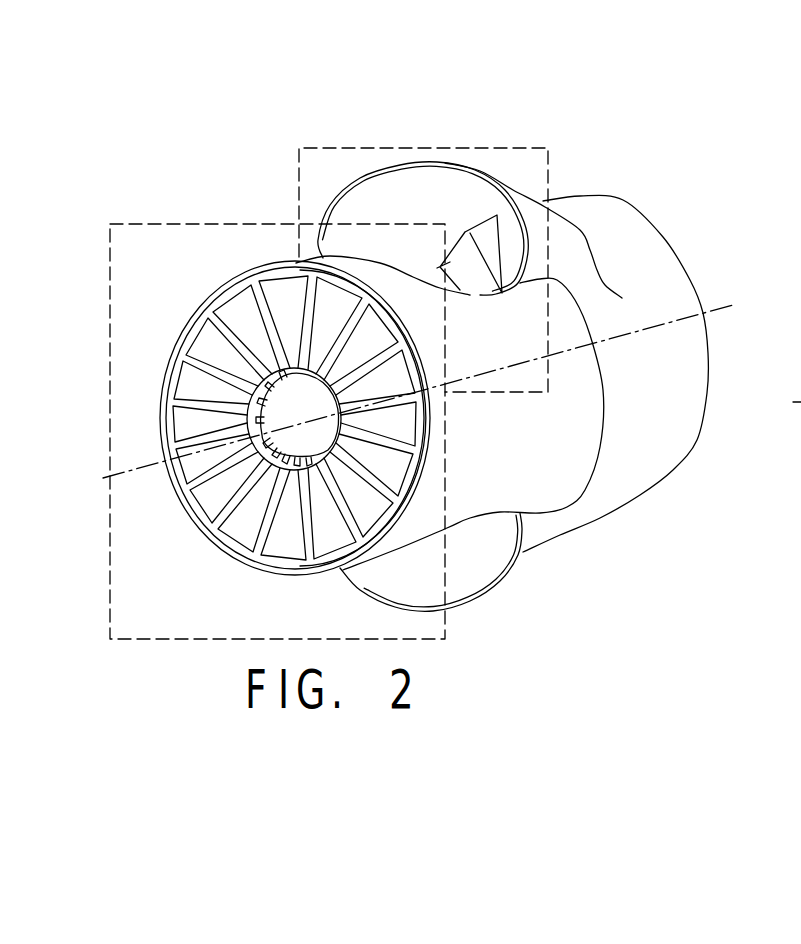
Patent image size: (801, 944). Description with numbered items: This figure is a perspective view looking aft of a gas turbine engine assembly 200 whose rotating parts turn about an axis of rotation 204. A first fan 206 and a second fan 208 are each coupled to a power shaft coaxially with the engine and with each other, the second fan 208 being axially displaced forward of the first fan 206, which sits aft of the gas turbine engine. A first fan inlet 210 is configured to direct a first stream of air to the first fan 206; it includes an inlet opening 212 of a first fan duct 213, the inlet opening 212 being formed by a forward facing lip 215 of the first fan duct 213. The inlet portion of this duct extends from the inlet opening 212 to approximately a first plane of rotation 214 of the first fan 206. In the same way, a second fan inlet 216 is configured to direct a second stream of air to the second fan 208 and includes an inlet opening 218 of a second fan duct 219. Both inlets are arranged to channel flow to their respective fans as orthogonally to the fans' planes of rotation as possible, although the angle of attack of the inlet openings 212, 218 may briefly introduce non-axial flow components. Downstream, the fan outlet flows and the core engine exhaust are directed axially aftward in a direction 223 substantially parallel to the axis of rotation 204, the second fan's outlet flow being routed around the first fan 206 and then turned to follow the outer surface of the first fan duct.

The gas turbine engine assembly 200 is at (646, 88).
The axis of rotation 204 is at (103, 478).
The first fan 206 is at (500, 232).
The second fan 208 is at (247, 522).
The first fan inlet 210 is at (442, 195).
The inlet opening 212 is at (343, 195).
The first fan duct 213 is at (537, 218).
The first plane of rotation 214 is at (552, 177).
The forward facing lip 215 is at (372, 195).
The second fan inlet 216 is at (152, 324).
The inlet opening 218 is at (200, 557).
The second fan duct 219 is at (437, 316).
The direction 223 is at (694, 508).